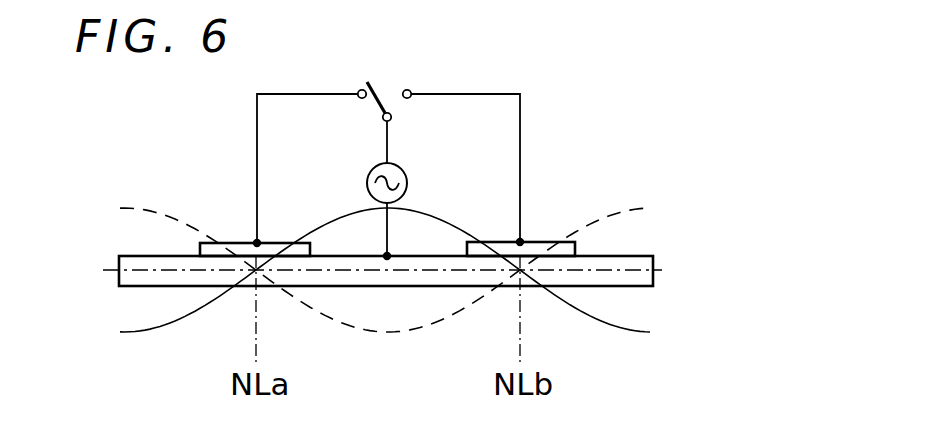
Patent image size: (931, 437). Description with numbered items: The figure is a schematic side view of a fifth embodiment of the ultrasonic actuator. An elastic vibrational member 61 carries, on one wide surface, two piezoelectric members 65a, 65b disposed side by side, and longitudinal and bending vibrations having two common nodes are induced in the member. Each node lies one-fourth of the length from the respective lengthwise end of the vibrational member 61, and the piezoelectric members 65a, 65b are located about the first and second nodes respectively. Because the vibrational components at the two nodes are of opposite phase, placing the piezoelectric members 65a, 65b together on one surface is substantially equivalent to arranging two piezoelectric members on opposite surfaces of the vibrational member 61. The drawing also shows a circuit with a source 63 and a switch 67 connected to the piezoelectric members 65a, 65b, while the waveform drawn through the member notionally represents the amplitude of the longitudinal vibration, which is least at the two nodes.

The elastic vibrational member 61 is at (633, 263).
The AC power source (oscillator) 63 is at (402, 172).
The piezoelectric member 65a is at (240, 243).
The piezoelectric member 65b is at (537, 241).
The switch 67 is at (386, 91).